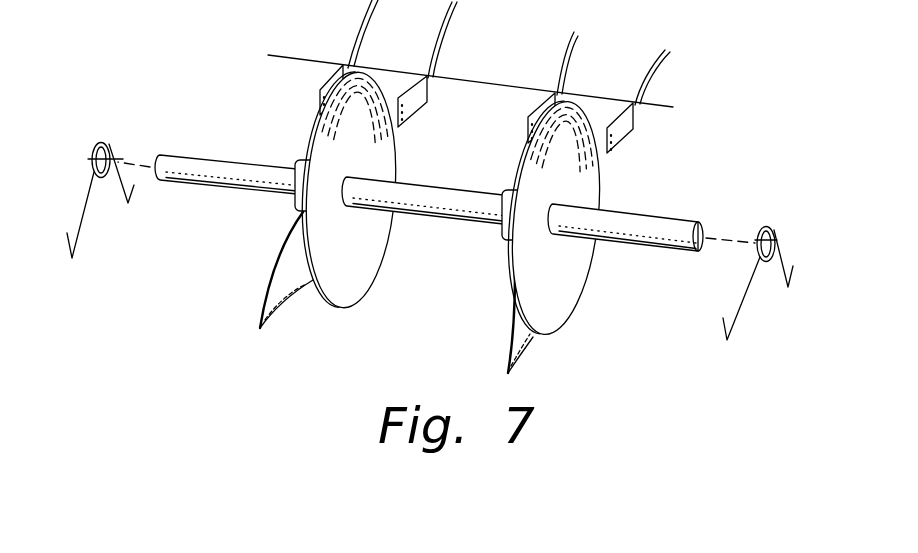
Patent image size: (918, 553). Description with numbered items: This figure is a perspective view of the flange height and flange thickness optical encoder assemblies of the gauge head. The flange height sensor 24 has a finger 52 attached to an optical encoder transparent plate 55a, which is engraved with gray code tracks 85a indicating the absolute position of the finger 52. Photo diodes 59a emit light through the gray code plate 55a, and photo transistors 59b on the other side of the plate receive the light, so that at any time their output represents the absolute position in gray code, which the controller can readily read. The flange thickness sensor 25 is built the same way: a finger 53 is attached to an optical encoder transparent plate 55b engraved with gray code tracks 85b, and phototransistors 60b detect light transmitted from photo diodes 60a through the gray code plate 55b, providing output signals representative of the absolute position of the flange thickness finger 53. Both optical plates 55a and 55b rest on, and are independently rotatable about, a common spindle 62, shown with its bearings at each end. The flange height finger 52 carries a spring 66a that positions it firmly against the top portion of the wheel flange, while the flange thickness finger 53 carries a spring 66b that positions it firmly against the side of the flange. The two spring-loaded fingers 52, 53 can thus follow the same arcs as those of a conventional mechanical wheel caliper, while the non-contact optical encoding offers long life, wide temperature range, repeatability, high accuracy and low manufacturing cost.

The flange height sensor 24 is at (549, 245).
The flange thickness sensor 25 is at (315, 207).
The finger 52 is at (510, 354).
The finger 53 is at (268, 262).
The optical encoder transparent plate 55a is at (565, 312).
The optical encoder transparent plate 55b is at (355, 287).
The photo diodes 59a is at (634, 131).
The photo transistors 59b is at (529, 118).
The photo diodes 60a is at (408, 108).
The phototransistors 60b is at (320, 97).
The spindle 62 is at (170, 155).
The spring 66a is at (736, 323).
The spring 66b is at (103, 142).
The gray code tracks 85a is at (597, 182).
The gray code tracks 85b is at (383, 163).